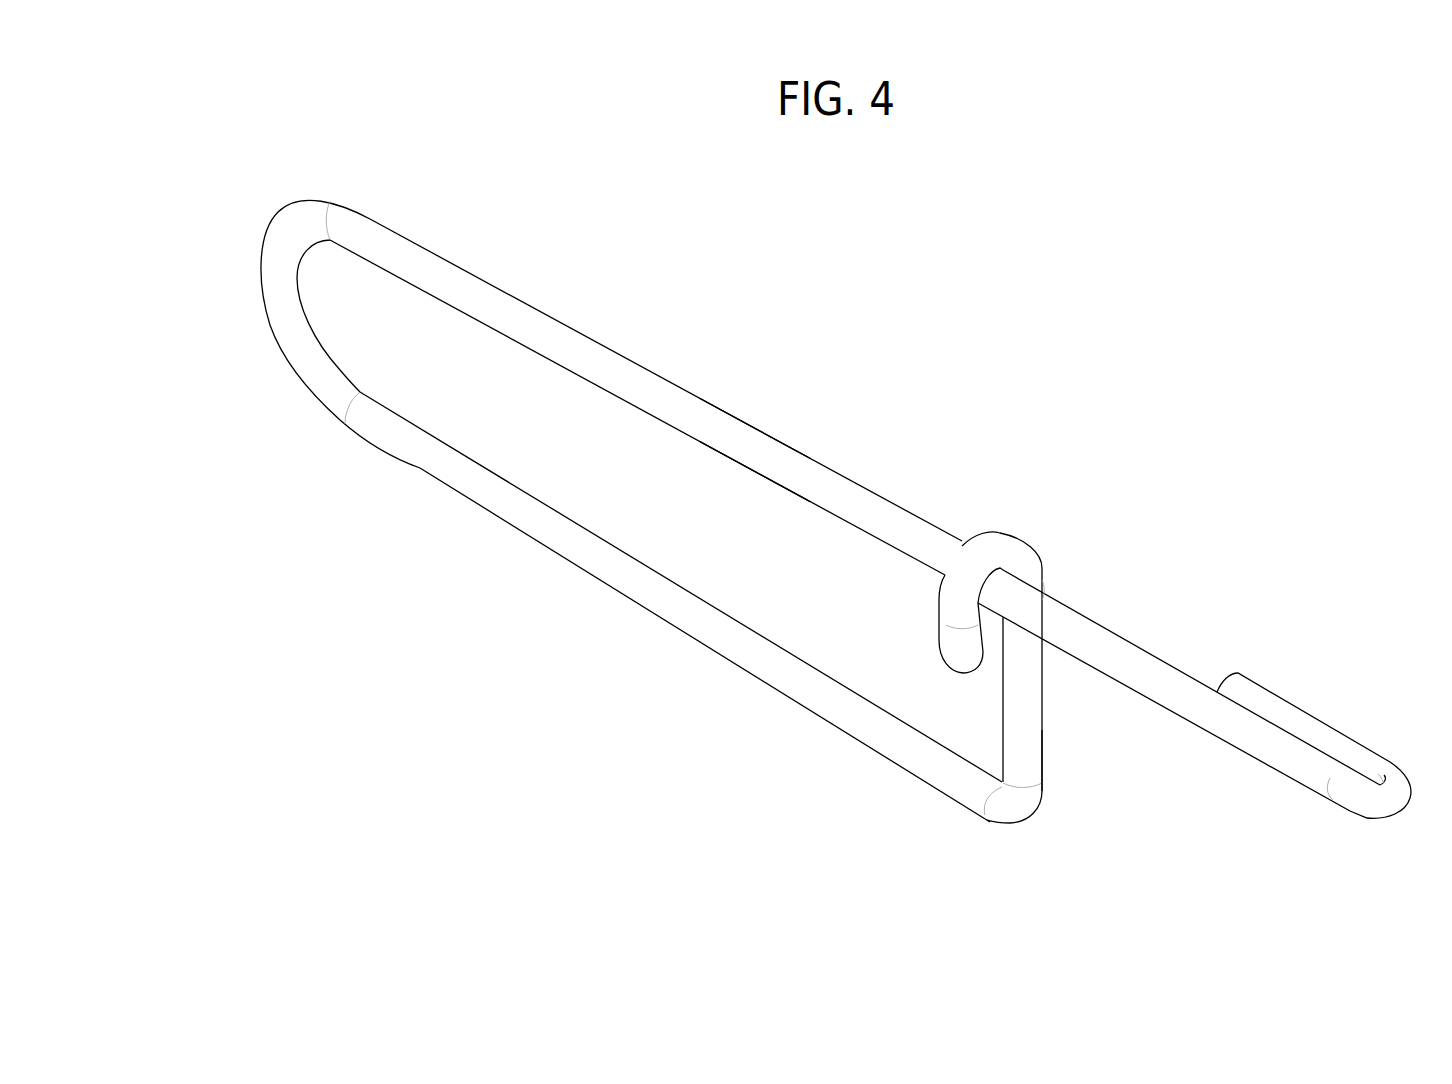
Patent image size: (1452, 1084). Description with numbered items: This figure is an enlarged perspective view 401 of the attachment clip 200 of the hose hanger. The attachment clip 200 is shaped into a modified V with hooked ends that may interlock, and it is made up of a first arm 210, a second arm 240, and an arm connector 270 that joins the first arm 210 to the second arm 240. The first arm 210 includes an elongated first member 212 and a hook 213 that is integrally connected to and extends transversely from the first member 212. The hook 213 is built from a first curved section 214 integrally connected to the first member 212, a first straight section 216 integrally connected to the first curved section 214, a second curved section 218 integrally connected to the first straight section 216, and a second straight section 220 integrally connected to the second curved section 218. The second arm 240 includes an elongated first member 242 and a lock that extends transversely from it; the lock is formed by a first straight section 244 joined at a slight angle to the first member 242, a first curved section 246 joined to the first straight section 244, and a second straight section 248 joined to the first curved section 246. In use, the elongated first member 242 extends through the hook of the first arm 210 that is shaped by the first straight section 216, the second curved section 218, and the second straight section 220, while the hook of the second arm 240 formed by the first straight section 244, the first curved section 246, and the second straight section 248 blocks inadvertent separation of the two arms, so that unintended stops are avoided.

The attachment clip 200 is at (784, 549).
The first arm 210 is at (580, 498).
The elongated first member 212 is at (765, 653).
The hook 213 is at (1043, 756).
The first curved section 214 is at (1010, 803).
The first straight section 216 is at (1066, 739).
The second curved section 218 is at (939, 572).
The second straight section 220 is at (957, 655).
The second arm 240 is at (646, 397).
The elongated first member 242 is at (745, 437).
The first straight section 244 is at (1194, 730).
The first curved section 246 is at (1380, 802).
The second straight section 248 is at (1302, 723).
The arm connector 270 is at (262, 252).
The enlarged perspective view 401 is at (1325, 337).